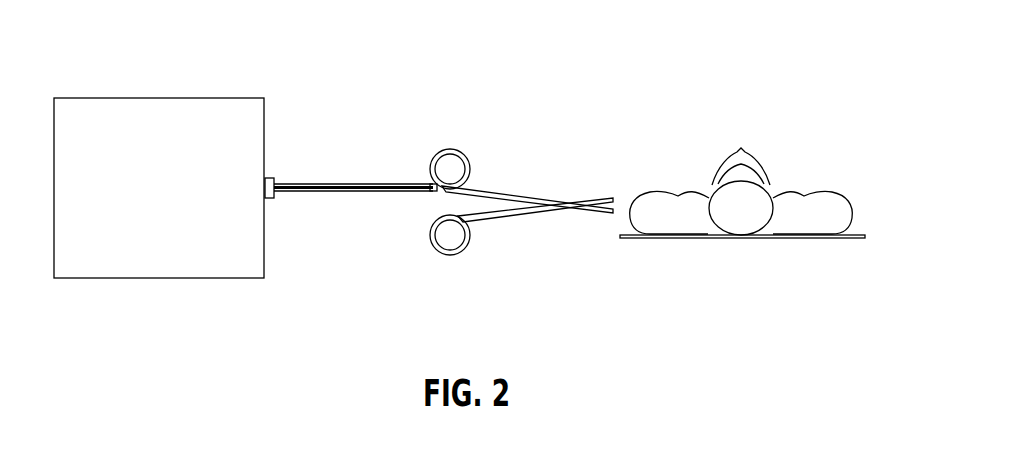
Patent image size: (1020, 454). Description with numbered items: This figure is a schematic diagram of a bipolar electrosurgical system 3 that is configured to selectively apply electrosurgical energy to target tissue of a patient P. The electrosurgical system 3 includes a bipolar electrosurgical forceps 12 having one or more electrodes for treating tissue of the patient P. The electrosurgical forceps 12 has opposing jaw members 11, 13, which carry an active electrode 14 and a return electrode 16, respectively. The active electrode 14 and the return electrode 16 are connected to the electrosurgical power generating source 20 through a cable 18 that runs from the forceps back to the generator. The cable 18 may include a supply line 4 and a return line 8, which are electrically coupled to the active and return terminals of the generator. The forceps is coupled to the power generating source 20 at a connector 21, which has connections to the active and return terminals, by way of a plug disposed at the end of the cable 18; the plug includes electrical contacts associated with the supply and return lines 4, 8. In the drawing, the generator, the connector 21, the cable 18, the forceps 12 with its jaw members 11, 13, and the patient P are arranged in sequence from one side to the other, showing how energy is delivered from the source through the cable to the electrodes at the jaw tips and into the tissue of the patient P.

The bipolar electrosurgical system 3 is at (536, 52).
The electrosurgical power generating source 20 is at (158, 98).
The connector 21 is at (268, 178).
The return line 8 is at (313, 184).
The supply line 4 is at (353, 190).
The cable 18 is at (372, 176).
The bipolar electrosurgical forceps 12 is at (540, 205).
The jaw member 11 is at (593, 188).
The jaw member 13 is at (602, 224).
The active electrode 14 is at (600, 203).
The return electrode 16 is at (598, 215).
The patient P is at (823, 175).